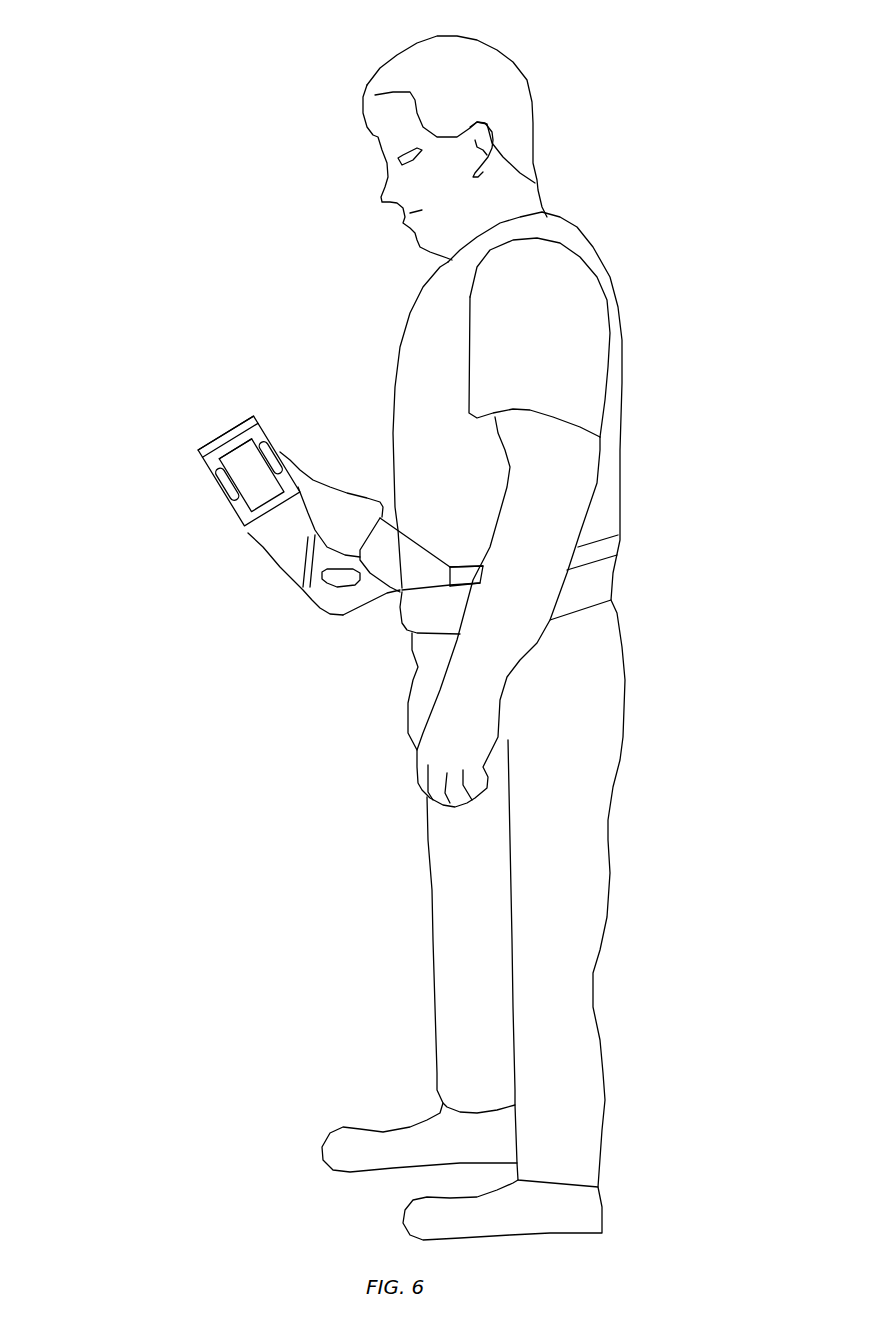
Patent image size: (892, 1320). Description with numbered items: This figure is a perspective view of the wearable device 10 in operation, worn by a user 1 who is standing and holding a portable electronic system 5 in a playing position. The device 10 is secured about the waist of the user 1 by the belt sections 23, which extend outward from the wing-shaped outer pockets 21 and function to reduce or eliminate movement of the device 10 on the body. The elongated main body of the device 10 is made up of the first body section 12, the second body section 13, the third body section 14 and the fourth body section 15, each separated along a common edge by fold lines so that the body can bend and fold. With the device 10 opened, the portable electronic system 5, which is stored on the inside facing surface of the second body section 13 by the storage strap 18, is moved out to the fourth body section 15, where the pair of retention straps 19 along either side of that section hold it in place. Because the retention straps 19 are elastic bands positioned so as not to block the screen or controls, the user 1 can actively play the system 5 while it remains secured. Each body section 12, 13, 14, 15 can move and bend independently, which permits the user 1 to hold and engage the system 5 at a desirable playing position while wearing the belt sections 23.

The user 1 is at (383, 88).
The portable electronic system 5 is at (232, 449).
The device 10 is at (174, 335).
The first body section 12 is at (395, 572).
The second body section 13 is at (344, 625).
The third body section 14 is at (287, 543).
The fourth body section 15 is at (220, 494).
The storage strap 18 is at (332, 583).
The retention straps 19 is at (256, 417).
The outer pockets 21 is at (433, 565).
The belt sections 23 is at (460, 568).